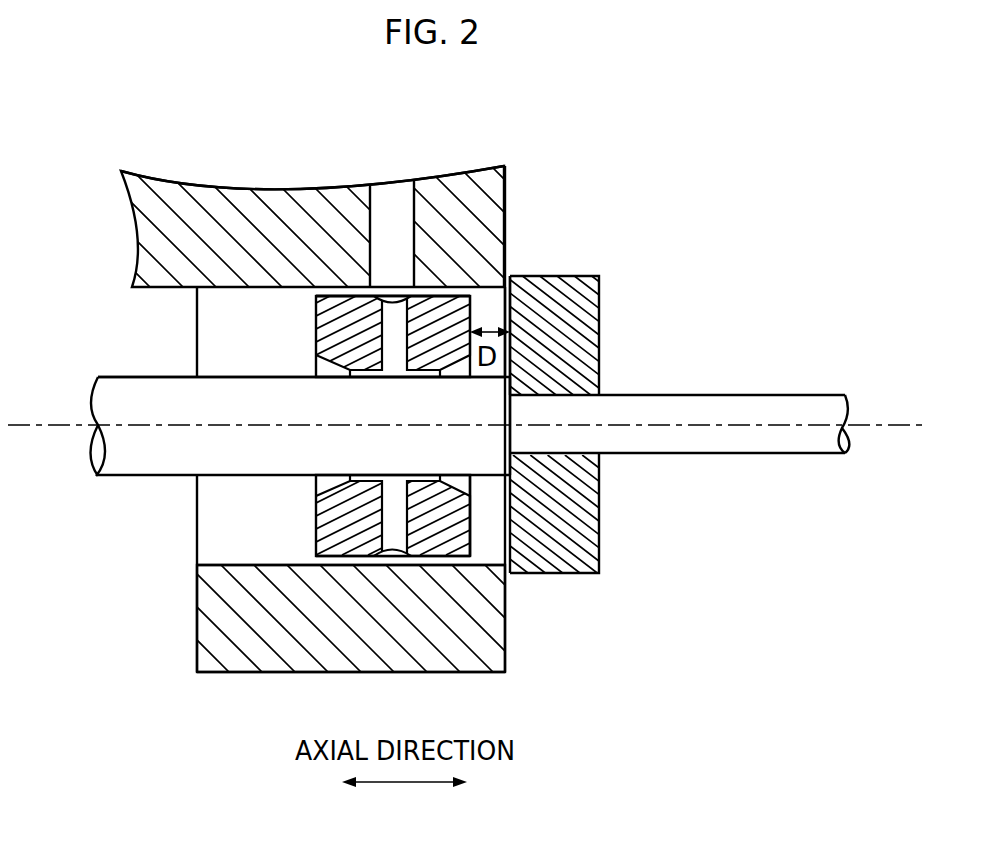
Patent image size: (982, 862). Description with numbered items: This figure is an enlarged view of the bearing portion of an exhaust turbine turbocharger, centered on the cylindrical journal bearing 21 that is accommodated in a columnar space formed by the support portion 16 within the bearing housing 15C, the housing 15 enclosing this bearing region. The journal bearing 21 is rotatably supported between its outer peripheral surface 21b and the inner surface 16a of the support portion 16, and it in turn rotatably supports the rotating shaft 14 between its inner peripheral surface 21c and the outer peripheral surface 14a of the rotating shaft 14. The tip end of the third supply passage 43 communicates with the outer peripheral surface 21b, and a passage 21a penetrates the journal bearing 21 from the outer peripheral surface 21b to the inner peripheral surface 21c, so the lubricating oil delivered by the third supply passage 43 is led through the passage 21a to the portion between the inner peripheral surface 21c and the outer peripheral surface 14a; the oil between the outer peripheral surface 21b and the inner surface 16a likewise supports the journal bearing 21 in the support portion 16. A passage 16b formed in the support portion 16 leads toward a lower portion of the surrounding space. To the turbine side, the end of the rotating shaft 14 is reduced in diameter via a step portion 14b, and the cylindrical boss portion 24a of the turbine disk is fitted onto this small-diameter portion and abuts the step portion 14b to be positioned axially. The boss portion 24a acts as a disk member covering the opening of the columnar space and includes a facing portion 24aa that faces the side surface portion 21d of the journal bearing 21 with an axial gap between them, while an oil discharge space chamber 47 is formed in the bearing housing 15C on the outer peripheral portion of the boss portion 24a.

The rotating shaft 14 is at (105, 366).
The outer peripheral surface of the rotating shaft 14a is at (146, 376).
The step portion 14b is at (513, 462).
The housing 15 is at (271, 208).
The bearing housing 15C is at (211, 200).
The support portion 16 is at (217, 612).
The inner surface of the support portion 16a is at (227, 564).
The passage 16b is at (198, 656).
The journal bearing 21 is at (381, 412).
The passage 21a is at (392, 350).
The outer peripheral surface 21b is at (335, 296).
The inner peripheral surface 21c is at (369, 372).
The side surface portion 21d is at (470, 520).
The boss portion 24a is at (566, 290).
The facing portion 24aa is at (505, 310).
The third supply passage 43 is at (393, 208).
The oil discharge space chamber 47 is at (563, 170).